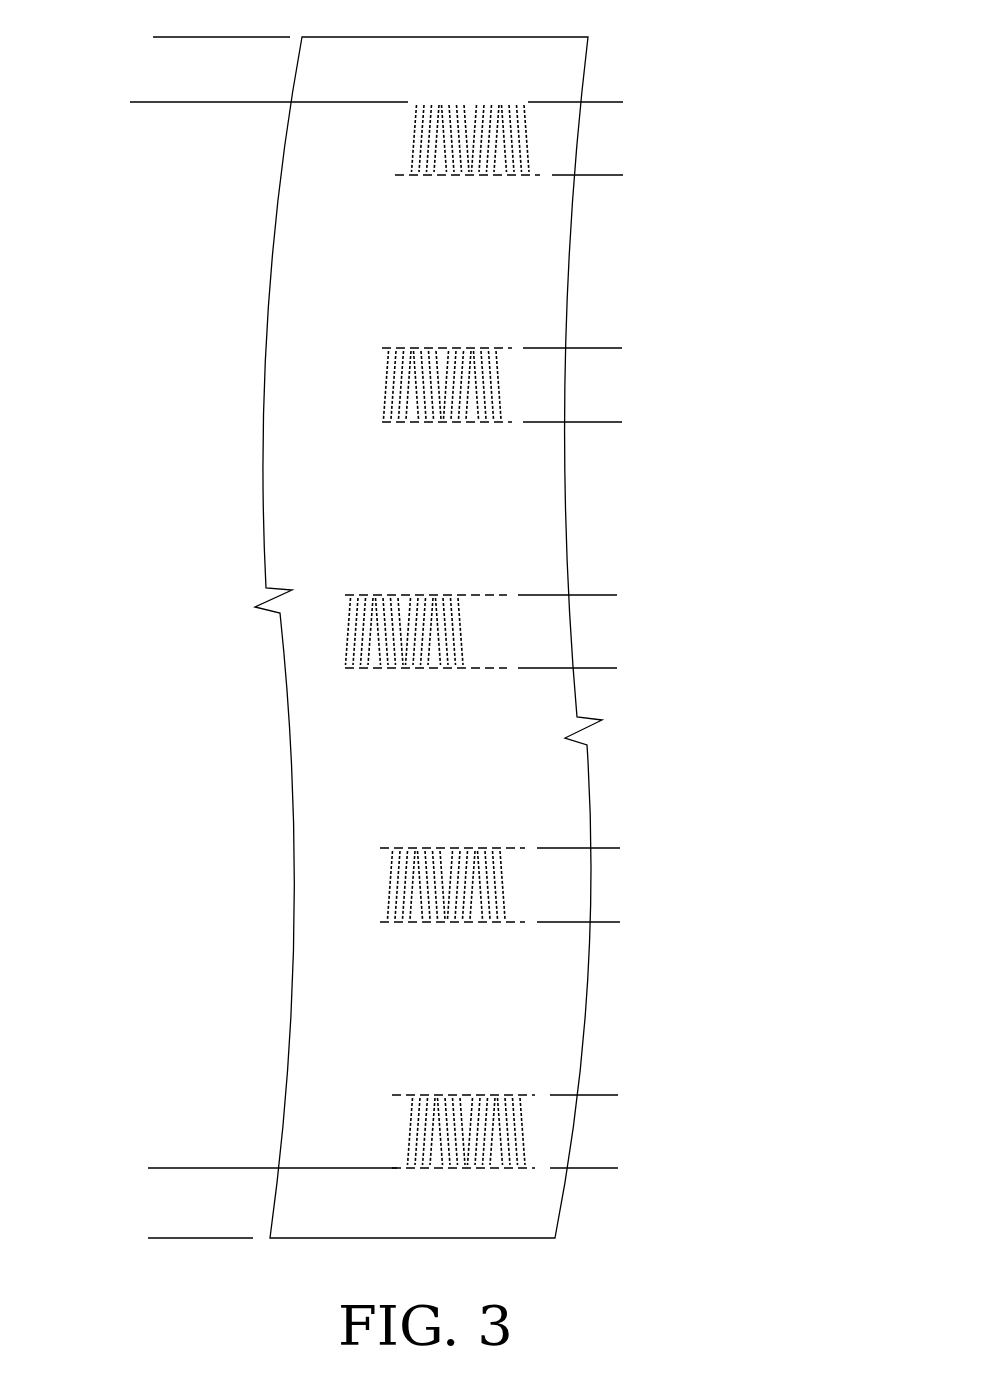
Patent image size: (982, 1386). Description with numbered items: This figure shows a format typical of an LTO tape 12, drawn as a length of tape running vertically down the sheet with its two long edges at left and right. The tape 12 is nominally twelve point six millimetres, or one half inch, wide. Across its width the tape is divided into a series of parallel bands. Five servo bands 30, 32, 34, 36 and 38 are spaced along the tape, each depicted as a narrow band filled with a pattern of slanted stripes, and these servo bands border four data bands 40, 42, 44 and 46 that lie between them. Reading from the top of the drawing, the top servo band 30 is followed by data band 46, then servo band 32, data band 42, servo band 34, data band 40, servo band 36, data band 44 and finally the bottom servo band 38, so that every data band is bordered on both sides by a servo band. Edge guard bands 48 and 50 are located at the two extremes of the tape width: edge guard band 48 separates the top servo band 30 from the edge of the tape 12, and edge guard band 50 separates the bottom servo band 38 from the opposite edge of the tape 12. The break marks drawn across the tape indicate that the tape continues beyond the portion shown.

The LTO tape 12 is at (545, 44).
The servo band 30 is at (408, 139).
The servo band 32 is at (386, 384).
The servo band 34 is at (345, 625).
The servo band 36 is at (385, 885).
The servo band 38 is at (405, 1127).
The data band 40 is at (378, 756).
The data band 42 is at (378, 510).
The data band 44 is at (376, 1010).
The data band 46 is at (378, 264).
The edge guard band 48 is at (332, 50).
The edge guard band 50 is at (322, 1228).